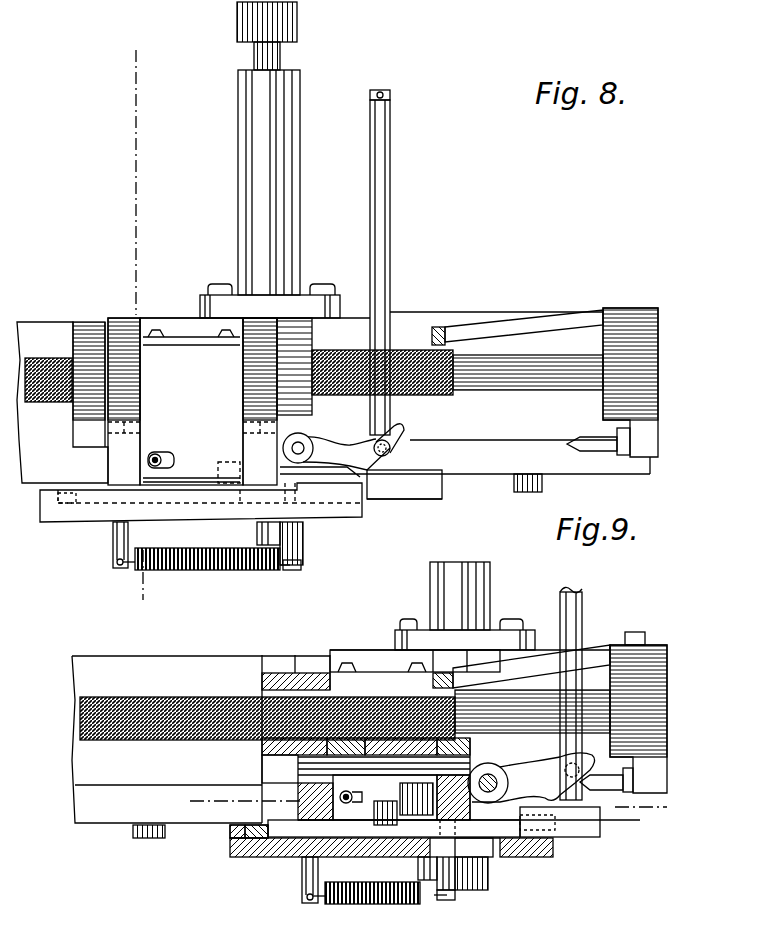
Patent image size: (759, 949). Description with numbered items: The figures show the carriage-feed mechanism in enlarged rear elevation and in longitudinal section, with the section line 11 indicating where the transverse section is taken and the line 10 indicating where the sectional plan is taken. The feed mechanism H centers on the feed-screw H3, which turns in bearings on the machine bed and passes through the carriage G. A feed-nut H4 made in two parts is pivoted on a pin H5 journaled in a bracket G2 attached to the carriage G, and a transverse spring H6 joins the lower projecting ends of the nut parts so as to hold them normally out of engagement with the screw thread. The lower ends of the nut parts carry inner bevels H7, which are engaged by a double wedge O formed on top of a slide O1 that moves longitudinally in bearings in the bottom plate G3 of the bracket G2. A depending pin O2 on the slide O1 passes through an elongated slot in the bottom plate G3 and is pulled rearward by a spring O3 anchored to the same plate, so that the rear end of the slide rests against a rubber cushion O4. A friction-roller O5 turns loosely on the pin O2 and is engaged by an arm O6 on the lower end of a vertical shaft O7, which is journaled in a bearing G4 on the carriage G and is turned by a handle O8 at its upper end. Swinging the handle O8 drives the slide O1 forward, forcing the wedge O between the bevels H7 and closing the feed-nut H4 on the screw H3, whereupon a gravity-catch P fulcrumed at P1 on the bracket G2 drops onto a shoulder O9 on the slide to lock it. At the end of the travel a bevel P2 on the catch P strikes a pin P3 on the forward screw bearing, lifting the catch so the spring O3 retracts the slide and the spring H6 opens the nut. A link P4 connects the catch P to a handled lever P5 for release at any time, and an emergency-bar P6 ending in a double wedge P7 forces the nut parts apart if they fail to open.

In FIG. 8, the section line 11 11 is at (100, 62).
In FIG. 9, the section line 10 10 is at (432, 804).
In FIG. 8, the carriage G is at (62, 402).
In FIG. 9, the carriage G is at (122, 665).
In FIG. 8, the bracket G2 is at (178, 320).
In FIG. 9, the bracket G2 is at (283, 672).
In FIG. 8, the bottom plate G3 is at (84, 518).
In FIG. 9, the bottom plate G3 is at (270, 858).
In FIG. 8, the bearing G4 is at (237, 152).
In FIG. 9, the bearing G4 is at (482, 580).
In FIG. 8, the feed mechanism H is at (383, 371).
In FIG. 9, the feed mechanism H is at (369, 724).
In FIG. 8, the feed-screw H3 is at (42, 356).
In FIG. 9, the feed-screw H3 is at (213, 695).
In FIG. 8, the feed-nut H4 is at (191, 401).
In FIG. 9, the feed-nut H4 is at (362, 690).
In FIG. 8, the pin H5 is at (122, 421).
In FIG. 9, the pin H5 is at (298, 768).
In FIG. 8, the spring H6 is at (159, 453).
In FIG. 9, the spring H6 is at (355, 797).
In FIG. 9, the bevels H7 is at (416, 799).
In FIG. 8, the double wedge O is at (220, 470).
In FIG. 9, the double wedge O is at (373, 812).
In FIG. 8, the slide O1 is at (408, 499).
In FIG. 9, the slide O1 is at (575, 830).
In FIG. 8, the depending pin O2 is at (298, 566).
In FIG. 9, the depending pin O2 is at (448, 900).
In FIG. 8, the spring O3 is at (205, 570).
In FIG. 9, the spring O3 is at (392, 898).
In FIG. 8, the rubber cushion O4 is at (58, 498).
In FIG. 9, the rubber cushion O4 is at (230, 836).
In FIG. 8, the friction-roller O5 is at (303, 538).
In FIG. 9, the friction-roller O5 is at (460, 886).
In FIG. 8, the arm O6 is at (257, 532).
In FIG. 9, the arm O6 is at (420, 872).
In FIG. 8, the shaft O7 is at (280, 58).
In FIG. 9, the shaft O7 is at (490, 873).
In FIG. 8, the handle O8 is at (297, 24).
In FIG. 8, the shoulder O9 is at (365, 477).
In FIG. 9, the shoulder O9 is at (526, 832).
In FIG. 8, the gravity-catch P is at (342, 450).
In FIG. 9, the gravity-catch P is at (527, 778).
In FIG. 8, the fulcrum P1 is at (312, 440).
In FIG. 9, the fulcrum P1 is at (494, 776).
In FIG. 8, the bevel P2 is at (400, 446).
In FIG. 9, the bevel P2 is at (568, 765).
In FIG. 8, the pin P3 is at (570, 449).
In FIG. 9, the pin P3 is at (640, 798).
In FIG. 8, the link P4 is at (390, 178).
In FIG. 9, the link P4 is at (582, 599).
In FIG. 8, the handled lever P5 is at (390, 93).
In FIG. 8, the emergency-bar P6 is at (553, 318).
In FIG. 9, the emergency-bar P6 is at (595, 655).
In FIG. 8, the double wedge P7 is at (443, 328).
In FIG. 9, the double wedge P7 is at (440, 673).